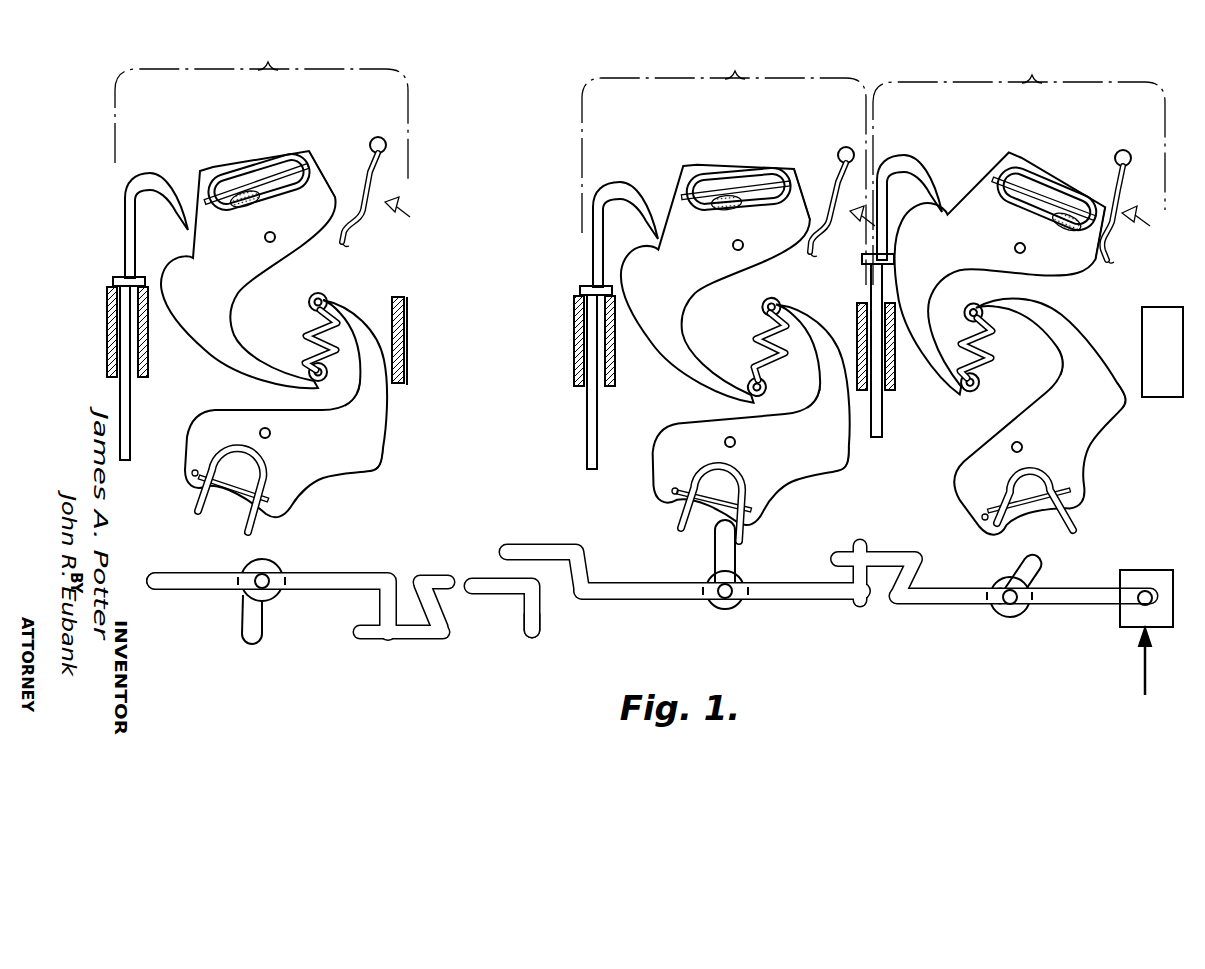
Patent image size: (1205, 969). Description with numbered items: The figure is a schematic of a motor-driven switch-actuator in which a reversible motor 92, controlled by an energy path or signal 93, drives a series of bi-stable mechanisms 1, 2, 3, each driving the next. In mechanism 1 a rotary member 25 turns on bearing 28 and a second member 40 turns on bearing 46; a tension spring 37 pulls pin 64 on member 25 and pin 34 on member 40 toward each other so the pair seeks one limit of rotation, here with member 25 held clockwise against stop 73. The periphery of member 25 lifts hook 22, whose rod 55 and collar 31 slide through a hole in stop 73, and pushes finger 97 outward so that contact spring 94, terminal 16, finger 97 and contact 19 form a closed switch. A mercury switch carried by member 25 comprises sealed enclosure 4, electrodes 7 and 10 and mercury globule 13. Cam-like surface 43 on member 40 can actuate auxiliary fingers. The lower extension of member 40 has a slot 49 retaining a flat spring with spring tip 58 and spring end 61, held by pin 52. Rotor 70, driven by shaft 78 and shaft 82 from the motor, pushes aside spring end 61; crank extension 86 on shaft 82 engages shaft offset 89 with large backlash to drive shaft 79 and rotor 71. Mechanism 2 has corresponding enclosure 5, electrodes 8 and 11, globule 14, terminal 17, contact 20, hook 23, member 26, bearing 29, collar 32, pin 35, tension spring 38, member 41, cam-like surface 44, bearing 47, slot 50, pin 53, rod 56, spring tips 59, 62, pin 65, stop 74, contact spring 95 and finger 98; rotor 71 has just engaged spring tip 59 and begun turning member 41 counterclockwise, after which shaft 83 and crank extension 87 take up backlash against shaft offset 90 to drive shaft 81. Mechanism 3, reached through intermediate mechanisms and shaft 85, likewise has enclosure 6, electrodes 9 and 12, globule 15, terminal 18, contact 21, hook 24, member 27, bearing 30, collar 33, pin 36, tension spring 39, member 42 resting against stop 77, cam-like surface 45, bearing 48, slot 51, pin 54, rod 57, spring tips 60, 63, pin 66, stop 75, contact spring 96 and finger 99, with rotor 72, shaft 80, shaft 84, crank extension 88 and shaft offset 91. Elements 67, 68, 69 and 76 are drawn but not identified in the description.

The mechanism 1 is at (1019, 164).
The mechanism 2 is at (724, 166).
The mechanism 3 is at (261, 107).
The sealed enclosure 4 is at (1027, 166).
The sealed enclosure 5 is at (753, 163).
The sealed enclosure 6 is at (283, 160).
The electrode 7 is at (1097, 197).
The electrode 8 is at (792, 170).
The electrode 9 is at (312, 160).
The electrode 10 is at (1000, 172).
The electrode 11 is at (695, 175).
The electrode 12 is at (206, 198).
The mercury globule 13 is at (1057, 220).
The mercury globule 14 is at (717, 199).
The mercury globule 15 is at (268, 204).
The terminal 16 is at (1120, 143).
The terminal 17 is at (841, 138).
The terminal 18 is at (380, 132).
The contact 19 is at (1141, 224).
The contact 20 is at (857, 225).
The contact 21 is at (401, 216).
The lifting hook 22 is at (906, 155).
The lifting hook 23 is at (620, 183).
The lifting hook 24 is at (124, 182).
The member 25 is at (982, 259).
The member 26 is at (710, 272).
The member 27 is at (248, 269).
The bearing 28 is at (1020, 254).
The bearing 29 is at (740, 248).
The bearing 30 is at (270, 243).
The collar 31 is at (867, 263).
The collar 32 is at (578, 288).
The collar 33 is at (113, 279).
The pin 34 is at (987, 306).
The pin 35 is at (776, 304).
The pin 36 is at (328, 301).
The tension spring 37 is at (988, 358).
The tension spring 38 is at (753, 333).
The tension spring 39 is at (305, 332).
The member 40 is at (1017, 415).
The member 41 is at (749, 416).
The member 42 is at (286, 408).
The cam-like surface 43 is at (1121, 410).
The cam-like surface 44 is at (846, 472).
The cam-like surface 45 is at (378, 471).
The bearing 46 is at (1027, 446).
The bearing 47 is at (725, 440).
The bearing 48 is at (260, 430).
The slot 49 is at (1047, 472).
The slot 50 is at (753, 510).
The slot 51 is at (280, 500).
The pin 52 is at (973, 503).
The pin 53 is at (670, 492).
The pin 54 is at (190, 474).
The rod 55 is at (880, 425).
The rod 56 is at (588, 430).
The rod 57 is at (120, 430).
The spring tip 58 is at (1076, 524).
The spring tip 59 is at (745, 532).
The spring tip 60 is at (253, 530).
The spring end 61 is at (1048, 542).
The spring tip 62 is at (683, 528).
The spring tip 63 is at (200, 513).
The pin 64 is at (966, 393).
The pin 65 is at (752, 390).
The pin 66 is at (308, 374).
The arm inner edge 67 is at (1050, 400).
The arm inner edge 68 is at (815, 394).
The arm inner edge 69 is at (352, 389).
The rotor 70 is at (1017, 560).
The rotor 71 is at (715, 560).
The rotor 72 is at (240, 623).
The stop 73 is at (895, 383).
The stop 74 is at (575, 367).
The stop 75 is at (107, 357).
The stop block 76 is at (1130, 297).
The stop 77 is at (400, 385).
The shaft 78 is at (1087, 610).
The shaft 79 is at (800, 601).
The shaft 80 is at (312, 595).
The shaft 81 is at (497, 596).
The shaft 82 is at (927, 600).
The shaft 83 is at (645, 601).
The shaft 84 is at (172, 592).
The shaft 85 is at (423, 576).
The crank extension 86 is at (890, 555).
The crank extension 87 is at (572, 545).
The crank extension 88 is at (403, 642).
The shaft offset 89 is at (864, 543).
The shaft offset 90 is at (541, 632).
The shaft offset 91 is at (372, 612).
The motor 92 is at (1123, 633).
The signal 93 is at (1127, 661).
The contact spring 94 is at (1120, 197).
The contact spring 95 is at (840, 187).
The contact spring 96 is at (366, 183).
The finger 97 is at (1119, 263).
The finger 98 is at (818, 259).
The finger 99 is at (348, 251).